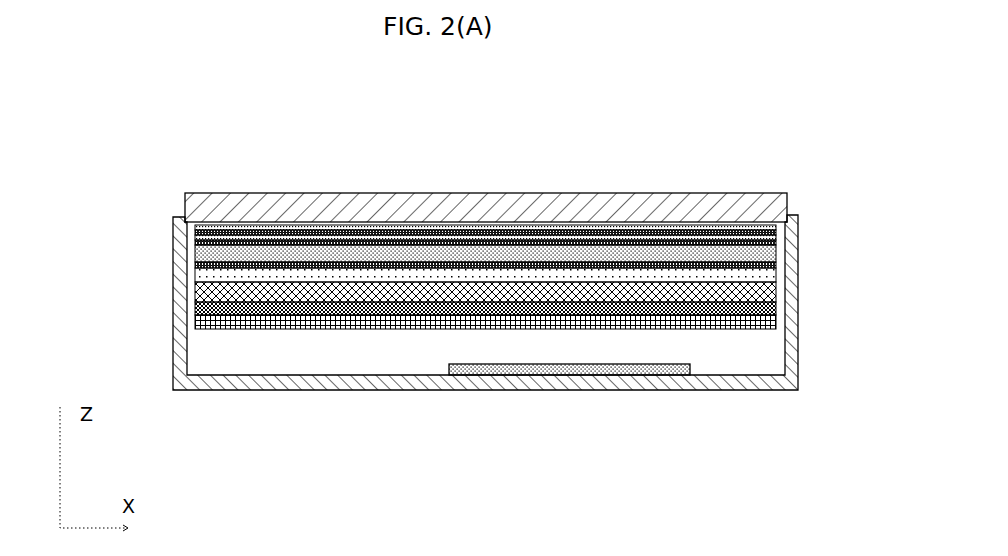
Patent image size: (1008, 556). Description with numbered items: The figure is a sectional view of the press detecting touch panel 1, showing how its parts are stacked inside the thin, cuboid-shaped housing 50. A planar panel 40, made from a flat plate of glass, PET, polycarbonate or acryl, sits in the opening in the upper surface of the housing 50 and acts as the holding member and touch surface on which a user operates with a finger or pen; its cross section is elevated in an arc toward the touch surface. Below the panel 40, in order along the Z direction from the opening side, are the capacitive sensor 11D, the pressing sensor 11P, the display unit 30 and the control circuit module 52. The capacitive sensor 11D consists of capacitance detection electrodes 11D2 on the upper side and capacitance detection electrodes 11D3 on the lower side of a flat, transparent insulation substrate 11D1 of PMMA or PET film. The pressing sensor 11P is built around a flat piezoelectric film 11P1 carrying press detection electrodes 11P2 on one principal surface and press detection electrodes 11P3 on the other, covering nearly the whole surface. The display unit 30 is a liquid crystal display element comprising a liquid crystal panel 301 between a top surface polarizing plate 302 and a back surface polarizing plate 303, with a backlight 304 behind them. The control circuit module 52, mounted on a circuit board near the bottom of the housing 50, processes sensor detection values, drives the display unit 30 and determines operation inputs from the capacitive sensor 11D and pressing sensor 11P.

The press detecting touch panel 1 is at (720, 144).
The panel 40 is at (445, 172).
The housing 50 is at (768, 392).
The control circuit module 52 is at (641, 392).
The display unit 30 is at (843, 258).
The liquid crystal panel 301 is at (778, 290).
The top surface polarizing plate 302 is at (778, 266).
The back surface polarizing plate 303 is at (778, 309).
The backlight 304 is at (778, 324).
The capacitive sensor 11D is at (110, 188).
The insulation substrate 11D1 is at (192, 235).
The capacitance detection electrodes 11D2 is at (192, 226).
The capacitance detection electrodes 11D3 is at (192, 250).
The pressing sensor 11P is at (110, 250).
The piezoelectric film 11P1 is at (192, 275).
The press detection electrodes 11P2 is at (192, 265).
The press detection electrodes 11P3 is at (192, 292).